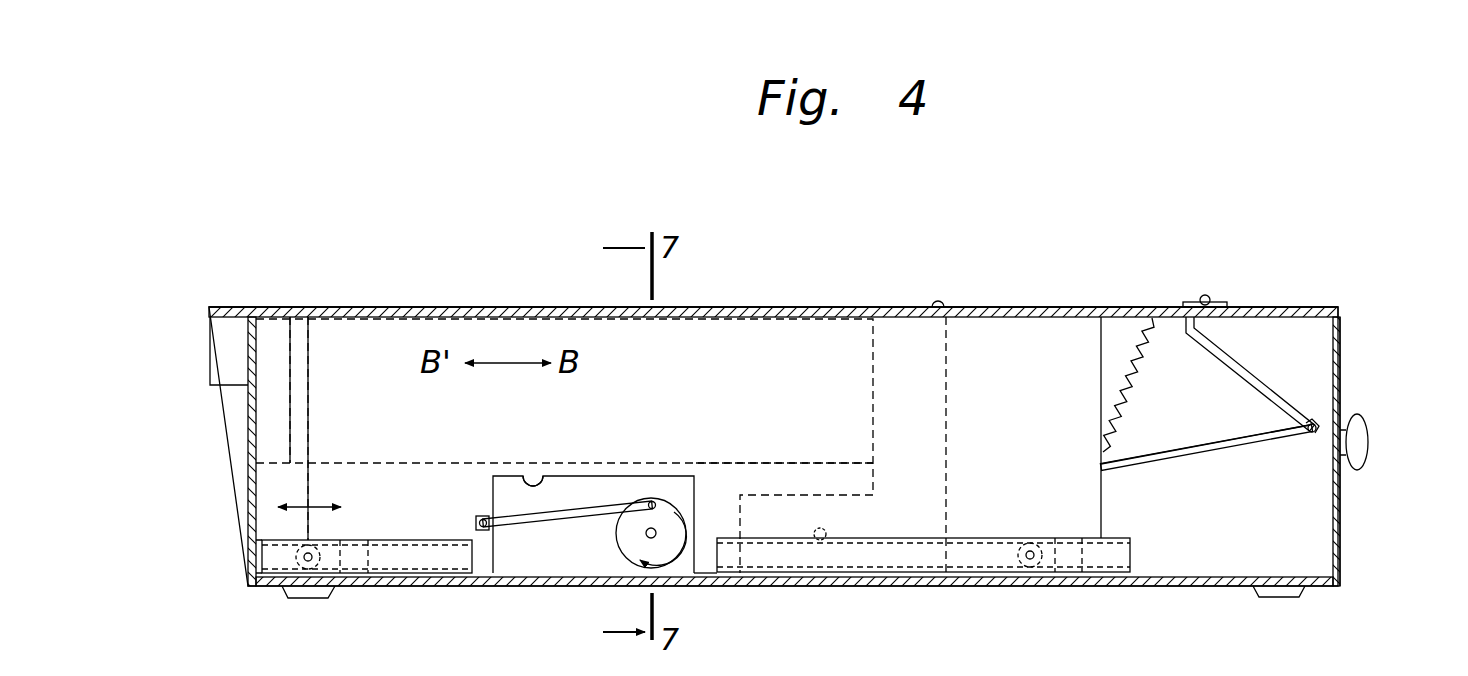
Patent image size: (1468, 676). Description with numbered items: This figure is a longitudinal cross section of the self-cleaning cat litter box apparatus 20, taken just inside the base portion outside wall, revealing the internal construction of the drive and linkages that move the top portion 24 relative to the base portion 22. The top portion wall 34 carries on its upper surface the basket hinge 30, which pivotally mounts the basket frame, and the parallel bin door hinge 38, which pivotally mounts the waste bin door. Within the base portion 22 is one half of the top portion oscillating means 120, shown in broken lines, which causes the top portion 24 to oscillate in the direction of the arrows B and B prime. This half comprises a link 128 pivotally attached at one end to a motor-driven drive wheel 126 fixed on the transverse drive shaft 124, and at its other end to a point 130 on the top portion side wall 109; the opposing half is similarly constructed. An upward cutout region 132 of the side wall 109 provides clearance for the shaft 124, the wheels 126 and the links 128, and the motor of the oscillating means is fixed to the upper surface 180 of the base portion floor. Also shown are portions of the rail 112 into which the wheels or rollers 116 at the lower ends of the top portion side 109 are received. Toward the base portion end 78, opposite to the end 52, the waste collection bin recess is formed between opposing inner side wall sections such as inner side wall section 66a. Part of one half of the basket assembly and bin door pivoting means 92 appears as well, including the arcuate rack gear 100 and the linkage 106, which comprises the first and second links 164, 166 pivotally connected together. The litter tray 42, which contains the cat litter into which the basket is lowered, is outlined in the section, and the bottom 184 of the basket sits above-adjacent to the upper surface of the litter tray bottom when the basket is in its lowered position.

The apparatus 20 is at (383, 275).
The base portion 22 is at (1350, 556).
The top portion 24 is at (205, 349).
The hinge 30 is at (940, 303).
The top portion wall 34 is at (1340, 310).
The hinge 38 is at (1205, 296).
The litter tray 42 is at (873, 443).
The end 52 is at (258, 546).
The inner side wall section 66a is at (1270, 552).
The base portion end 78 is at (1342, 546).
The basket assembly and bin door pivoting means 92 is at (1252, 352).
The arcuate rack gear 100 is at (1150, 378).
The linkage 106 is at (1255, 450).
The top portion side wall 109 is at (298, 436).
The rail 112 is at (1132, 546).
The wheels or rollers 116 is at (302, 562).
The top portion oscillating means 120 is at (668, 485).
The transverse shaft 124 is at (645, 537).
The drive wheel 126 is at (670, 566).
The link 128 is at (520, 532).
The point 130 is at (479, 520).
The upward cutout region 132 is at (535, 480).
The first link 164 is at (1135, 467).
The second link 166 is at (1282, 395).
The upper surface 180 is at (532, 568).
The bottom 184 is at (375, 588).